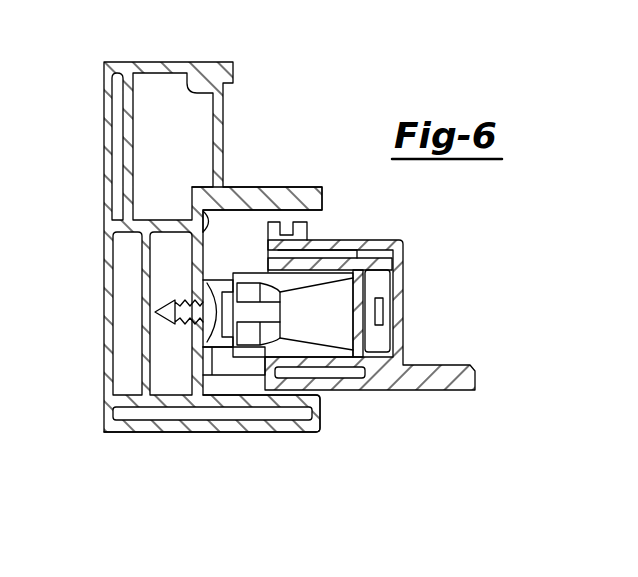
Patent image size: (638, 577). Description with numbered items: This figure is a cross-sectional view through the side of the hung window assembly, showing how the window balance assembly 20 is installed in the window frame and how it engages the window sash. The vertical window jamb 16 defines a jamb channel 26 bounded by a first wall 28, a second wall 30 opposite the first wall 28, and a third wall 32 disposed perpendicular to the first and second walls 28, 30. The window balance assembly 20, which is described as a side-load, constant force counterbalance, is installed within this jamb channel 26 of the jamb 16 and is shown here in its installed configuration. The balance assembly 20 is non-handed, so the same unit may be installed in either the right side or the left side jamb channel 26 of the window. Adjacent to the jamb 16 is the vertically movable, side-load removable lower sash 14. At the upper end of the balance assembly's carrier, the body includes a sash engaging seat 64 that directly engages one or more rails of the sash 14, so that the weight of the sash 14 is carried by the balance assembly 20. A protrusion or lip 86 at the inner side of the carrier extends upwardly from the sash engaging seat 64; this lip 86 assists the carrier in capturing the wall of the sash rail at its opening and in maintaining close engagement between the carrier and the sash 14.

The lower sash 14 is at (411, 390).
The window jamb 16 is at (142, 62).
The window balance assembly 20 is at (323, 272).
The jamb channel 26 is at (247, 233).
The first wall 28 is at (232, 217).
The second wall 30 is at (214, 388).
The third wall 32 is at (194, 209).
The sash engaging seat 64 is at (369, 313).
The lip 86 is at (380, 305).